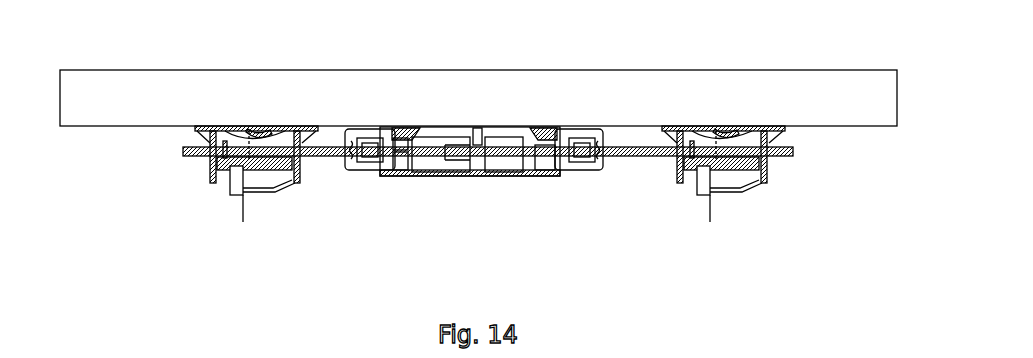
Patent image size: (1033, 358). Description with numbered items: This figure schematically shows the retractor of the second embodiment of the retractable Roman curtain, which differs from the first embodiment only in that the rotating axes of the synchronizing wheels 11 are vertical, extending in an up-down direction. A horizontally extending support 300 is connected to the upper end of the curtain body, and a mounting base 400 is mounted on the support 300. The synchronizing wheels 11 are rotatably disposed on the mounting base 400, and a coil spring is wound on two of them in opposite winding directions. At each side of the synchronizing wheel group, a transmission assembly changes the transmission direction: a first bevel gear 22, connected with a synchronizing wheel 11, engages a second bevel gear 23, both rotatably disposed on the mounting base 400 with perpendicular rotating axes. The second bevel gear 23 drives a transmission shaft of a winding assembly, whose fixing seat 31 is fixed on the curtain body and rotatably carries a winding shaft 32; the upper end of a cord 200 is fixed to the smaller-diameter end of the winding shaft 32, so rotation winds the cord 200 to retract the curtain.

The support 300 is at (562, 105).
The first bevel gear 22 is at (530, 130).
The synchronizing wheel 11 is at (448, 182).
The mounting base 400 is at (568, 180).
The second bevel gear 23 is at (623, 157).
The cord 200 is at (746, 201).
The winding shaft 32 is at (733, 170).
The fixing seat 31 is at (767, 167).